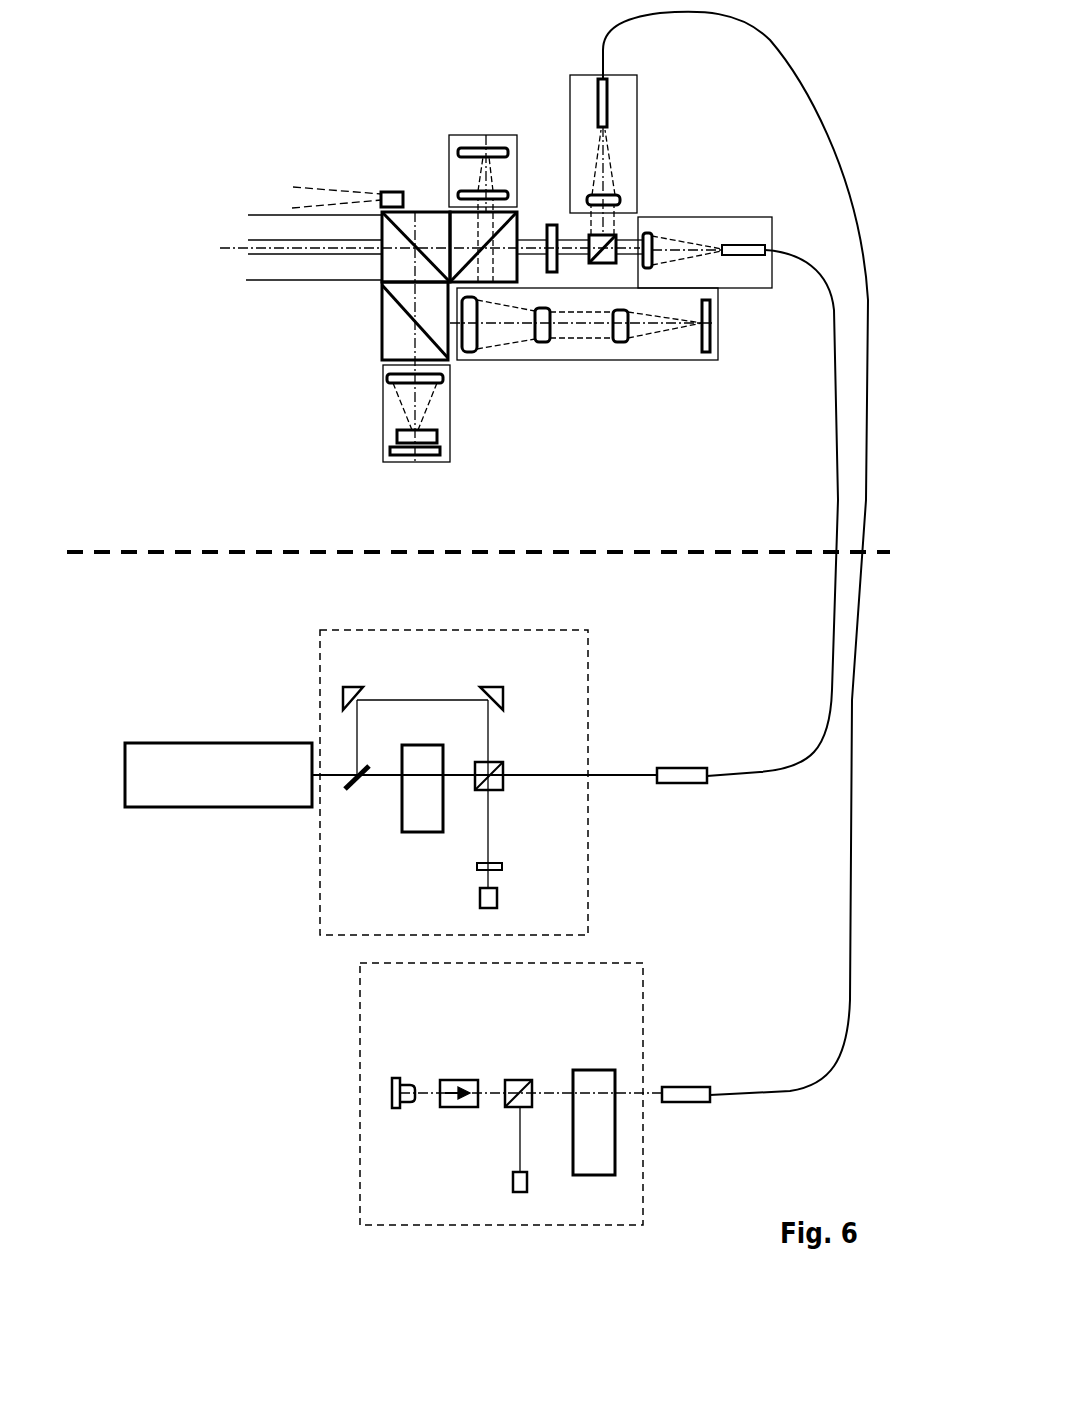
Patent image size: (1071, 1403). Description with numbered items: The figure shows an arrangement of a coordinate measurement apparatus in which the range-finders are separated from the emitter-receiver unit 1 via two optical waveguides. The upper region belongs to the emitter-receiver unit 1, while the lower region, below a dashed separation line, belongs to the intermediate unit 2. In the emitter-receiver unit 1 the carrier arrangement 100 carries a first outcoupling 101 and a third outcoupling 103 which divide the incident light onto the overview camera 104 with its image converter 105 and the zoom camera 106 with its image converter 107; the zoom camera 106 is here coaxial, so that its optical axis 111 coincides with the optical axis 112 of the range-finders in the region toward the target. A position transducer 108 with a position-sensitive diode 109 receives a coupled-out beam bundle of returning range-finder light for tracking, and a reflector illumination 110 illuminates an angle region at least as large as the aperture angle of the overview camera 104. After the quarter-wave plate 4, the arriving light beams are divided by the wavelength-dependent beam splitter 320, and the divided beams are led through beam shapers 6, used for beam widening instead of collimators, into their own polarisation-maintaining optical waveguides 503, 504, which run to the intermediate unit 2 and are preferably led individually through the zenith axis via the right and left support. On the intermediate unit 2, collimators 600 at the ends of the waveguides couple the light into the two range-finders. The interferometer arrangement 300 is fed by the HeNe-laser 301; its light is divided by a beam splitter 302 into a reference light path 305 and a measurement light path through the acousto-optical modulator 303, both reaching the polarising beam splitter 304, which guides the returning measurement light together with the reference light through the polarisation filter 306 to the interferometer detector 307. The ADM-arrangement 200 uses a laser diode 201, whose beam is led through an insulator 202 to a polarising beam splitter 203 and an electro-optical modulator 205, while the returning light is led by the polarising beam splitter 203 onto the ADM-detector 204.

The emitter-receiver unit 1 is at (136, 515).
The intermediate unit 2 is at (138, 609).
The carrier arrangement 100 is at (219, 499).
The first outcoupling 101 is at (512, 308).
The third outcoupling 103 is at (380, 321).
The overview camera 104 is at (380, 413).
The image converter 105 is at (392, 463).
The zoom camera 106 is at (584, 352).
The image converter 107 is at (705, 358).
The position transducer 108 is at (453, 160).
The position-sensitive diode 109 is at (483, 116).
The reflector illumination 110 is at (366, 175).
The optical axis of the zoom camera 111 is at (282, 211).
The optical axis of the range-finder 112 is at (314, 233).
The quarter-wave plate 4 is at (555, 221).
The wavelength-dependent beam splitter 320 is at (646, 195).
The beam shaper 6 is at (671, 181).
The polarisation-maintaining optical waveguide 503 is at (772, 513).
The polarisation-maintaining optical waveguide 504 is at (735, 553).
The collimator 600 is at (702, 914).
The interferometer arrangement 300 is at (576, 664).
The HeNe-laser 301 is at (218, 806).
The beam splitter 302 is at (407, 777).
The acousto-optical modulator 303 is at (368, 793).
The polarising beam splitter 304 is at (513, 756).
The reference light path 305 is at (423, 684).
The polarisation filter 306 is at (452, 865).
The interferometer detector 307 is at (449, 897).
The ADM-arrangement 200 is at (629, 998).
The laser diode 201 is at (401, 1064).
The insulator 202 is at (459, 1063).
The polarising beam splitter 203 is at (524, 1096).
The ADM-detector 204 is at (483, 1181).
The electro-optical modulator 205 is at (592, 1091).